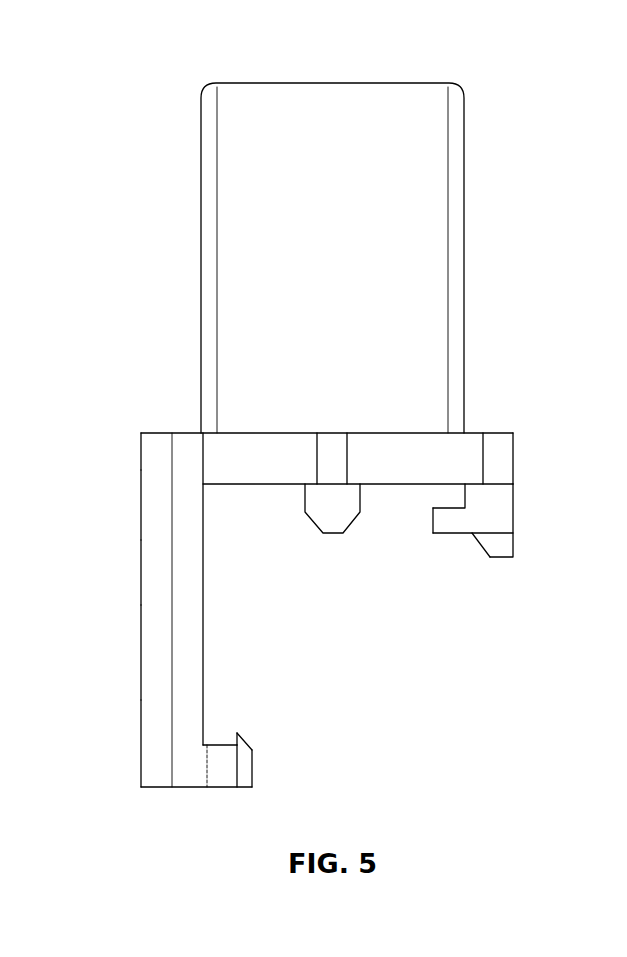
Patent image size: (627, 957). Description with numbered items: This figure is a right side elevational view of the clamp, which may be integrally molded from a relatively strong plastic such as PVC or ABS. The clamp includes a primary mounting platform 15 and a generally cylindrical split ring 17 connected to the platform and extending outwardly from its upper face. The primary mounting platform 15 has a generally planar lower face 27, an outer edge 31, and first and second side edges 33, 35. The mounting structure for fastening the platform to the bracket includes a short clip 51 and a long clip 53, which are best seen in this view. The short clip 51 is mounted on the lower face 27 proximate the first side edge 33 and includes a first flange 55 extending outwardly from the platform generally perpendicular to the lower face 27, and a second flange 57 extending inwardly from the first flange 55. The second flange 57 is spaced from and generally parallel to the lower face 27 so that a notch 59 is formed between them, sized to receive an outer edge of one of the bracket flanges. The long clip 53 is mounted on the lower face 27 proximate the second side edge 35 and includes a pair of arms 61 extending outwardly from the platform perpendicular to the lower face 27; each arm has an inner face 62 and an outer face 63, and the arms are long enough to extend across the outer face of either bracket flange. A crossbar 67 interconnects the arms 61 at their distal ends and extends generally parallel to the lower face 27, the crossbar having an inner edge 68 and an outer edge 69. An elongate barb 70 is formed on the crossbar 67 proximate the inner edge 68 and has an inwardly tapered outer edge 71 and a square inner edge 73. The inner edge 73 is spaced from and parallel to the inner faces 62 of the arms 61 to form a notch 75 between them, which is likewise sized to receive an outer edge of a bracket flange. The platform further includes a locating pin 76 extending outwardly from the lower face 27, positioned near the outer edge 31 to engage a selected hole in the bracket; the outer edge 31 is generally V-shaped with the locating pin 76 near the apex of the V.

The split ring 17 is at (378, 82).
The primary mounting platform 15 is at (258, 433).
The outer edge 31 is at (415, 445).
The lower face 27 is at (253, 485).
The locating pin 76 is at (362, 497).
The first side edge 33 is at (517, 438).
The first flange 55 is at (505, 512).
The notch 59 is at (440, 505).
The short clip 51 is at (513, 527).
The second flange 57 is at (440, 537).
The second side edge 35 is at (140, 447).
The arms 61 is at (141, 527).
The outer face 63 is at (141, 590).
The long clip 53 is at (141, 650).
The outer edge 69 is at (142, 772).
The inner face 62 is at (205, 602).
The notch 75 is at (213, 742).
The inner edge 73 is at (233, 737).
The barb 70 is at (240, 733).
The outer edge 71 is at (245, 742).
The inner edge 68 is at (255, 773).
The crossbar 67 is at (207, 788).